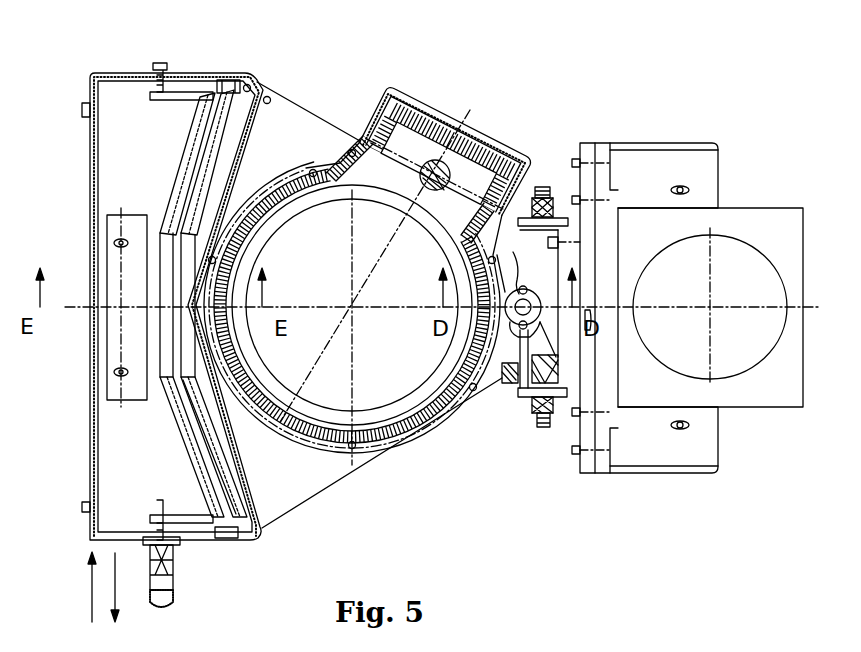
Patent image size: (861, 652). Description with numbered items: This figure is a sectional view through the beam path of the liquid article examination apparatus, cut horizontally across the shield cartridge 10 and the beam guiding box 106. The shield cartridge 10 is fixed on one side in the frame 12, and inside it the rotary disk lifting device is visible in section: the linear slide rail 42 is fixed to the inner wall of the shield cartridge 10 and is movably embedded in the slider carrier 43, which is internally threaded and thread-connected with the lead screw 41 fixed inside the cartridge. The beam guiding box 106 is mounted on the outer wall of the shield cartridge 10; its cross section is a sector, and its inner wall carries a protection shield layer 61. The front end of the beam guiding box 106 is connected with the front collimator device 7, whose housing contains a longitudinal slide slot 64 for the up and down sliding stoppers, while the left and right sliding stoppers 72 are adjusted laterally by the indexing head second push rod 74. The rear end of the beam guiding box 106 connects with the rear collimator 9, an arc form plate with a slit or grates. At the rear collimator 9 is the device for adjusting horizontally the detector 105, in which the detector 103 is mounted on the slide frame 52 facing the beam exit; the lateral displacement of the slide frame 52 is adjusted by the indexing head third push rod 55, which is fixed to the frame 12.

The front collimator device 7 is at (514, 268).
The rear collimator 9 is at (254, 80).
The shield cartridge 10 is at (514, 123).
The frame 12 is at (92, 481).
The lead screw 41 is at (452, 170).
The linear slide rail 42 is at (482, 132).
The slider carrier 43 is at (413, 130).
The slide frame 52 is at (187, 467).
The indexing head third push rod 55 is at (168, 584).
The protection shield layer 61 is at (502, 362).
The longitudinal slide slot 64 is at (523, 399).
The left and right sliding stoppers 72 is at (567, 370).
The indexing head second push rod 74 is at (542, 428).
The detector 103 is at (165, 228).
The device for adjusting horizontally the detector 105 is at (113, 265).
The beam guiding box 106 is at (283, 123).